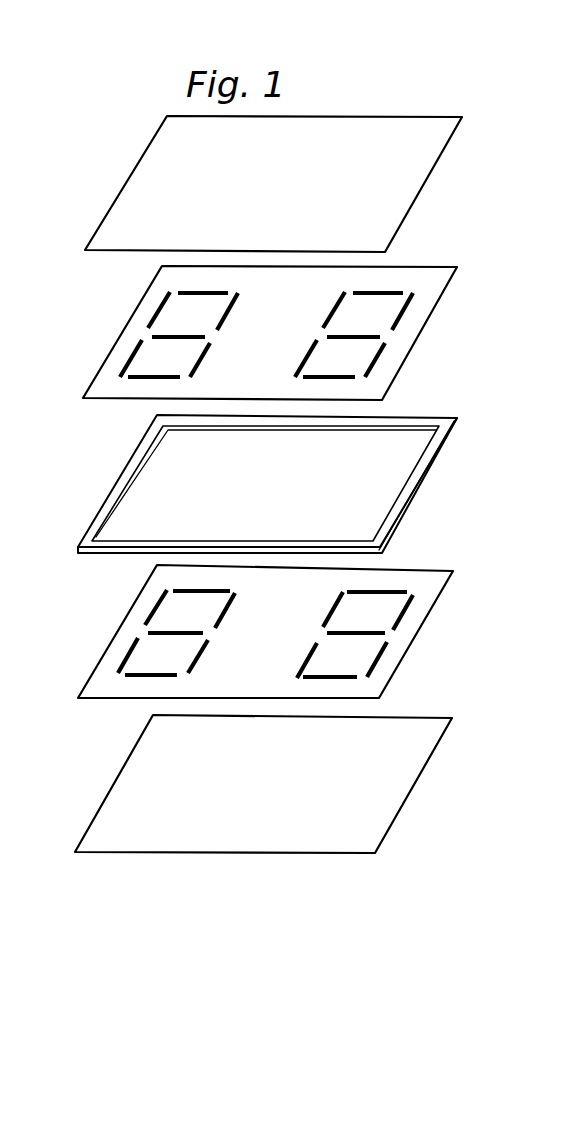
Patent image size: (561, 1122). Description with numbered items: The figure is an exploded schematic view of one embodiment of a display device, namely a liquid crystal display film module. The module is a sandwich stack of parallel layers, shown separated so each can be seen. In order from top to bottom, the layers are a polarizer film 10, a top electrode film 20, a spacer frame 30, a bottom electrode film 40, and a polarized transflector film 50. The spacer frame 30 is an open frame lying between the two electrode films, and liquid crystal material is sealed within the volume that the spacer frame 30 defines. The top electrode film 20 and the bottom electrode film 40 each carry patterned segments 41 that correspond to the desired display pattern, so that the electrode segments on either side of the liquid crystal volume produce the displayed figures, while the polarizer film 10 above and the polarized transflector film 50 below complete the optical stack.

The polarizer film 10 is at (440, 153).
The top electrode film 20 is at (433, 312).
The spacer frame 30 is at (422, 491).
The bottom electrode film 40 is at (292, 636).
The segments 41 is at (226, 608).
The polarized transflector film 50 is at (422, 776).